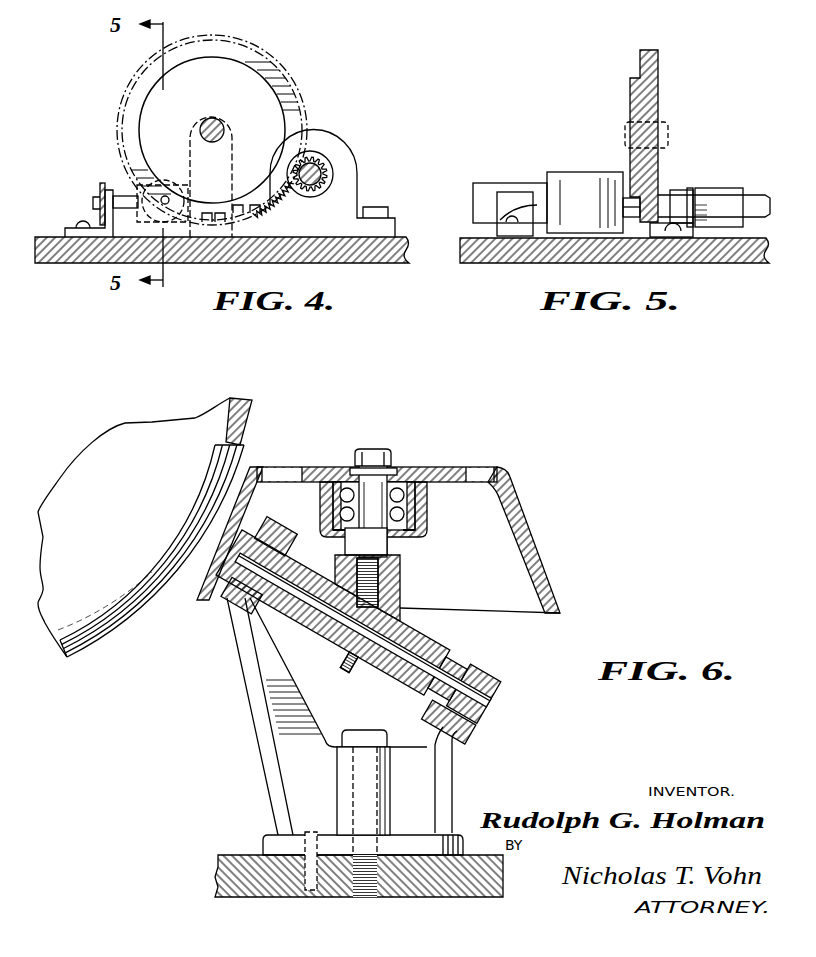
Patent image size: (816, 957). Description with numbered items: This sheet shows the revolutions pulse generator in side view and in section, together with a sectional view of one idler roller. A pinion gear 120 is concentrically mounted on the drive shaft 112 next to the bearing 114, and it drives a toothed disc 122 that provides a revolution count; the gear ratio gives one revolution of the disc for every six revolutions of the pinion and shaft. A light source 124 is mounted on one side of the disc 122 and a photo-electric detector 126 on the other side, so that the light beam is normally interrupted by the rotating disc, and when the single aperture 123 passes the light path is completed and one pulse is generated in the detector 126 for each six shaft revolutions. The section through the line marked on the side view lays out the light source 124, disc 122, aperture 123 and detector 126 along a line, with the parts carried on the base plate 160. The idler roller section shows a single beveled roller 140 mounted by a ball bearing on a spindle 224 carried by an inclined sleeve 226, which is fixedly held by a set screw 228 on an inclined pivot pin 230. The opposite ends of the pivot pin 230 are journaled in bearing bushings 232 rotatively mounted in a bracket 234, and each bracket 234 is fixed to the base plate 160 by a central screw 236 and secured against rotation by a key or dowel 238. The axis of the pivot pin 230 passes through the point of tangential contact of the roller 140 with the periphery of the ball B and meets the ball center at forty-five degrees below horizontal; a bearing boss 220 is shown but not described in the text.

In FIG. 4, the drive shaft 112 is at (330, 176).
In FIG. 4, the bearing 114 is at (328, 126).
In FIG. 4, the pinion gear 120 is at (326, 168).
In FIG. 4, the toothed disc 122 is at (277, 212).
In FIG. 5, the toothed disc 122 is at (652, 52).
In FIG. 4, the aperture 123 is at (160, 201).
In FIG. 5, the aperture 123 is at (648, 202).
In FIG. 4, the light source 124 is at (176, 188).
In FIG. 5, the light source 124 is at (720, 198).
In FIG. 5, the photo-electric detector 126 is at (577, 178).
In FIG. 6, the beveled idler roller 140 is at (529, 535).
In FIG. 4, the base plate 160 is at (378, 258).
In FIG. 5, the base plate 160 is at (718, 258).
In FIG. 6, the base plate 160 is at (226, 873).
In FIG. 6, the bearing boss 220 is at (403, 492).
In FIG. 6, the spindle 224 is at (369, 482).
In FIG. 6, the inclined sleeve 226 is at (434, 635).
In FIG. 6, the set screw 228 is at (349, 662).
In FIG. 6, the inclined pivot pin 230 is at (460, 677).
In FIG. 6, the bearing bushing 232 is at (277, 533).
In FIG. 6, the bracket 234 is at (236, 602).
In FIG. 6, the central screw 236 is at (363, 733).
In FIG. 6, the key or dowel 238 is at (308, 830).
In FIG. 6, the ball B is at (115, 440).